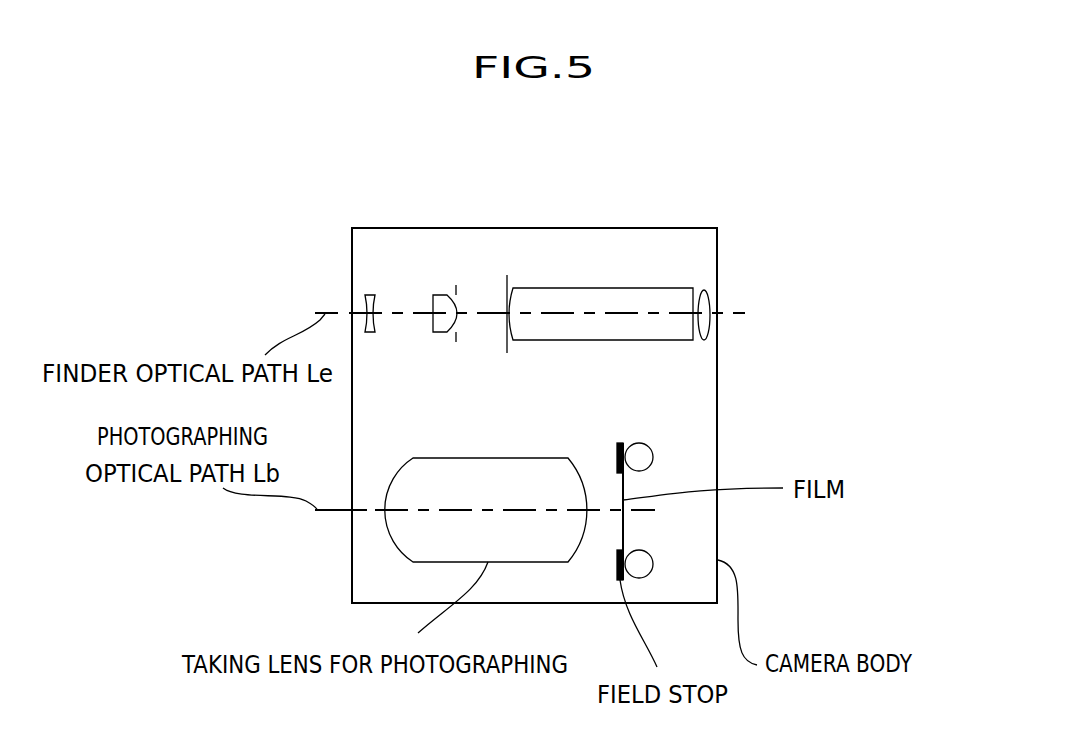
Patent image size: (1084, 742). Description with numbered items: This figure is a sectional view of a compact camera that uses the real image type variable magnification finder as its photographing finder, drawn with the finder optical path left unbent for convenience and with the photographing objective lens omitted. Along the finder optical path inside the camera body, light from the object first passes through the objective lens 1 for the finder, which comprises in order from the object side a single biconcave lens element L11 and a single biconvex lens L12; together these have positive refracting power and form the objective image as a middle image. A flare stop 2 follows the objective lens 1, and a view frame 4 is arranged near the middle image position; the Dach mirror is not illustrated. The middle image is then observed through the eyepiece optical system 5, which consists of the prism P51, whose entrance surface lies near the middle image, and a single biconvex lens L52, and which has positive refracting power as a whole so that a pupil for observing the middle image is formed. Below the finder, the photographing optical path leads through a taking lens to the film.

The object optical system 1 is at (352, 228).
The flare stop 2 is at (456, 293).
The view frame 4 is at (505, 276).
The eyepiece optical system 5 is at (712, 228).
The biconcave lens element L11 is at (372, 295).
The biconvex lens L12 is at (444, 294).
The prism P51 is at (595, 288).
The biconvex lens L52 is at (702, 290).